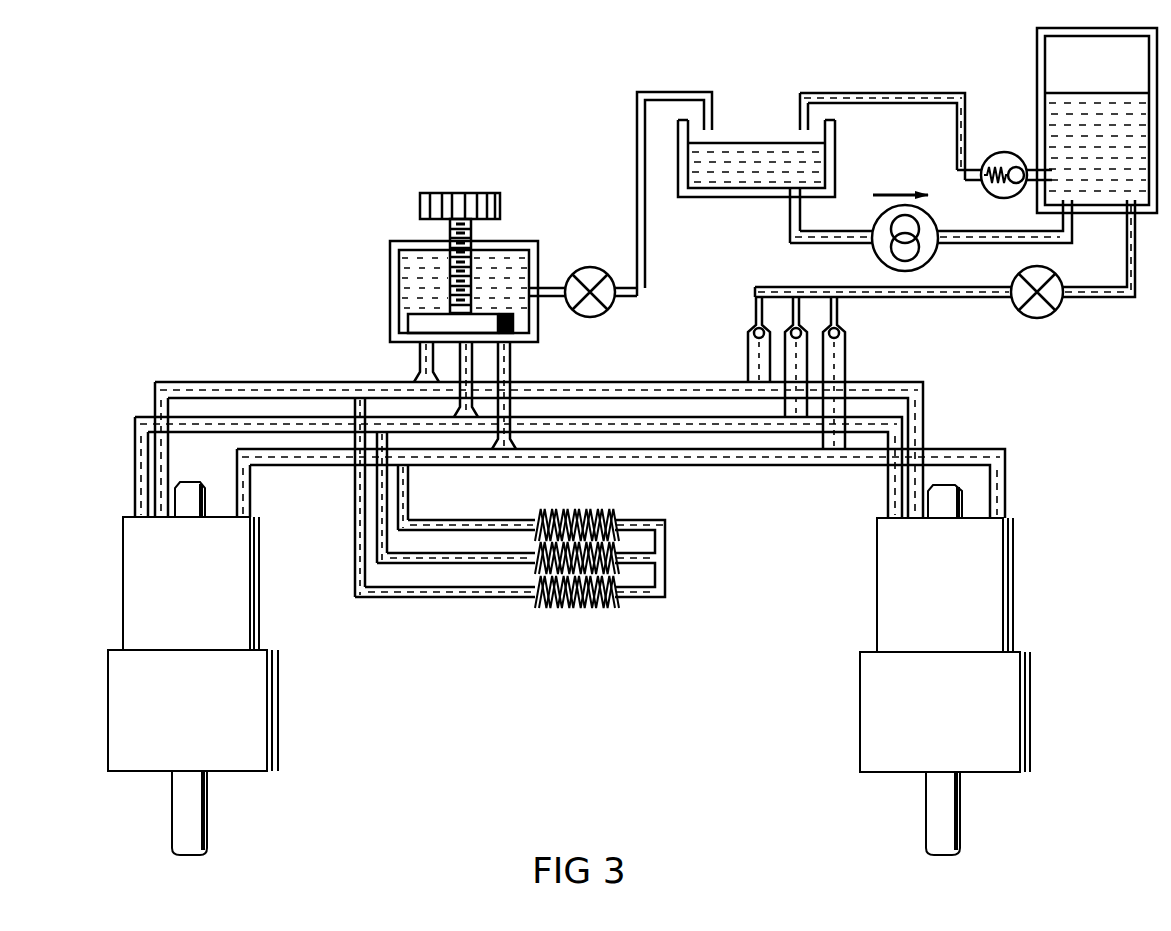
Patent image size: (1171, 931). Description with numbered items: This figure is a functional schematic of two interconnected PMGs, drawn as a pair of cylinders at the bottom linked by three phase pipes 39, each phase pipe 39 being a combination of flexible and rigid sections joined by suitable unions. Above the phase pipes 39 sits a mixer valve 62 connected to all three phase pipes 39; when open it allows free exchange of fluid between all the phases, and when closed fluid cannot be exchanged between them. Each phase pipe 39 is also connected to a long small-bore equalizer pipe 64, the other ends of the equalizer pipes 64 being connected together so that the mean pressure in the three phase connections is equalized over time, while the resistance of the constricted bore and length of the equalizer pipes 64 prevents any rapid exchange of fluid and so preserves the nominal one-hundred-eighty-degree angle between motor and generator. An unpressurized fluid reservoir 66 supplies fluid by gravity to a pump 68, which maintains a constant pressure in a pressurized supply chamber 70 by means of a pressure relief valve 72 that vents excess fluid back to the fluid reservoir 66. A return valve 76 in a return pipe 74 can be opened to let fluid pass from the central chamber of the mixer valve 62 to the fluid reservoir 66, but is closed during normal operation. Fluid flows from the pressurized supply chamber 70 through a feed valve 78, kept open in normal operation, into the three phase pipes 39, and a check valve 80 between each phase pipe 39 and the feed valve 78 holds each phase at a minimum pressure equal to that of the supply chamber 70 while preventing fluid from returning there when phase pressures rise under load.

The phase pipe 39 is at (272, 448).
The mixer valve 62 is at (388, 292).
The equalizer pipe 64 is at (527, 530).
The fluid reservoir 66 is at (738, 203).
The pump 68 is at (868, 256).
The pressurized supply chamber 70 is at (1035, 85).
The pressure relief valve 72 is at (1000, 148).
The return pipe 74 is at (553, 282).
The return valve 76 is at (610, 312).
The feed valve 78 is at (1056, 316).
The check valve 80 is at (745, 326).